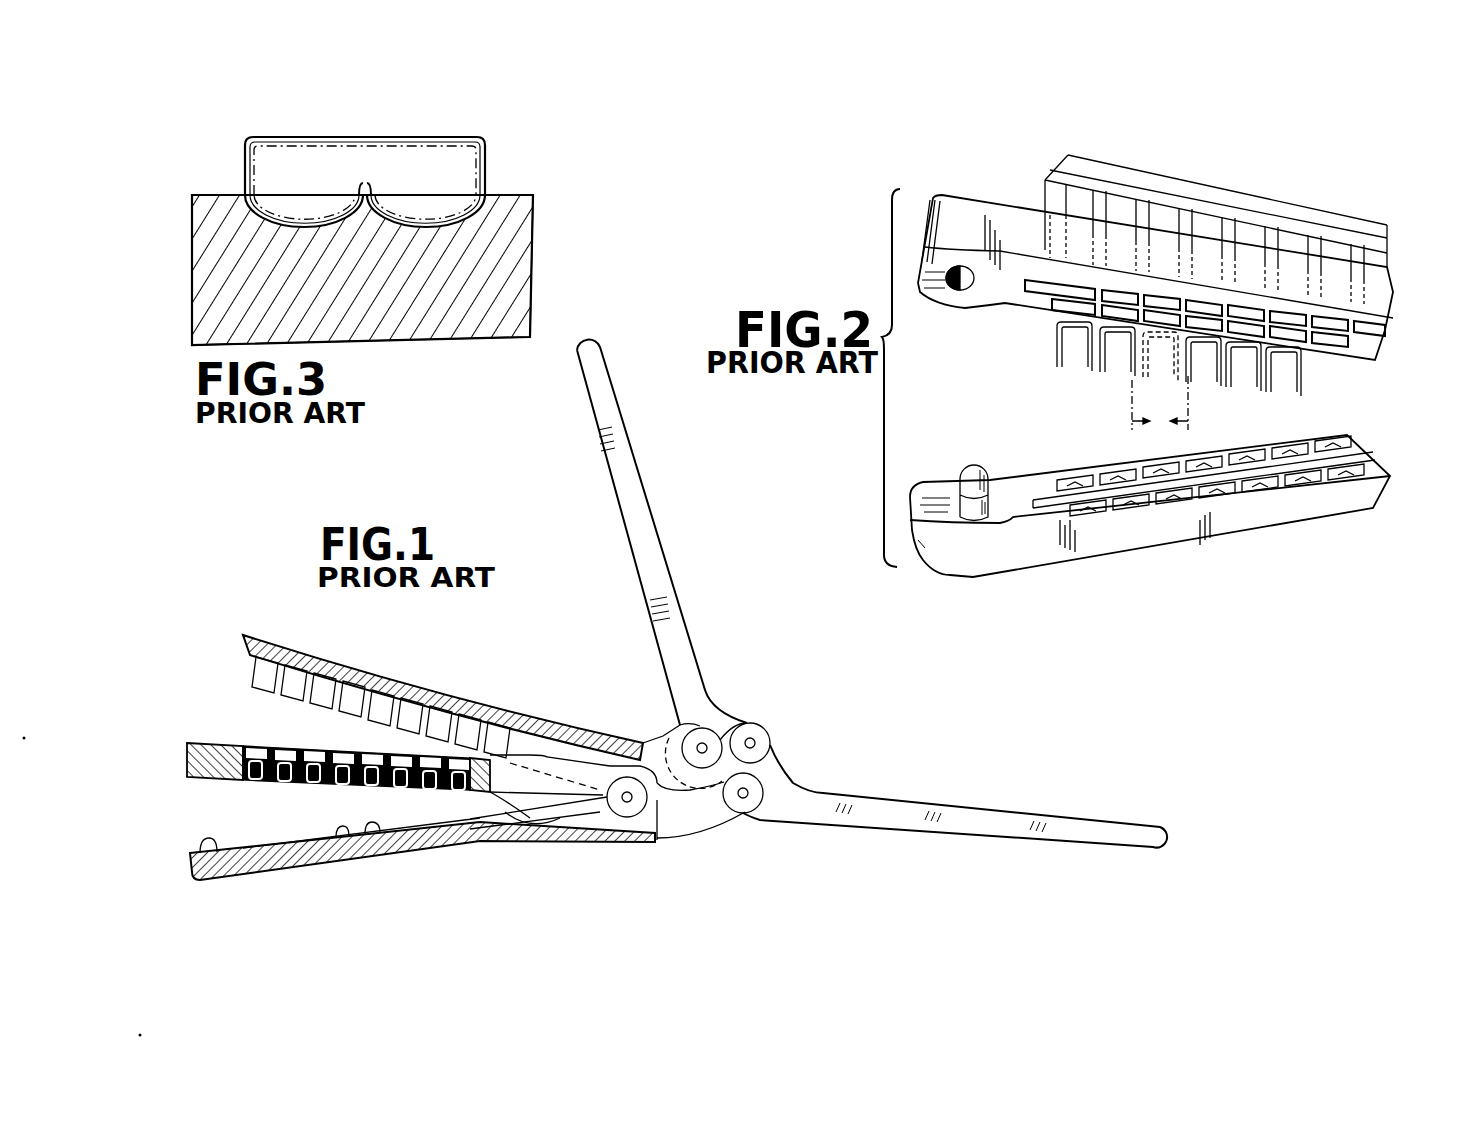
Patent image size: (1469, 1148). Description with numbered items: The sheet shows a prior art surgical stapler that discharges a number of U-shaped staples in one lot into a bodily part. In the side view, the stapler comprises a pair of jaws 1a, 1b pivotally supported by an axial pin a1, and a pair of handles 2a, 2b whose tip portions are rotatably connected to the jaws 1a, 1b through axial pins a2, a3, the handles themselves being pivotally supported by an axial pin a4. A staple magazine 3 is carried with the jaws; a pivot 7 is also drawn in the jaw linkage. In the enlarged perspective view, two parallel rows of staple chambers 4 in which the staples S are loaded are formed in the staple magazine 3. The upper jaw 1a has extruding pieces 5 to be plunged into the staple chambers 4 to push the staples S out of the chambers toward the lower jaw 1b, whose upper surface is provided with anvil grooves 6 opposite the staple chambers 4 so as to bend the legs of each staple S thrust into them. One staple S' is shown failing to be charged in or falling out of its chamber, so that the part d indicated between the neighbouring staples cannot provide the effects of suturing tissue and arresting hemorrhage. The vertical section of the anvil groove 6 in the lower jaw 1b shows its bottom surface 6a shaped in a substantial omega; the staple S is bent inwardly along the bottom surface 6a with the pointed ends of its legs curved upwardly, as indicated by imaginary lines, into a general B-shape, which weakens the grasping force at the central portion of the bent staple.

In FIG. 2, the upper jaw 1a is at (1060, 170).
In FIG. 1, the upper jaw 1a is at (462, 700).
In FIG. 3, the lower jaw 1b is at (490, 278).
In FIG. 2, the lower jaw 1b is at (1027, 548).
In FIG. 1, the lower jaw 1b is at (430, 845).
In FIG. 1, the handle 2a is at (645, 538).
In FIG. 1, the handle 2b is at (977, 820).
In FIG. 2, the staple magazine 3 is at (968, 220).
In FIG. 1, the staple magazine 3 is at (195, 745).
In FIG. 2, the staple chambers 4 is at (1170, 296).
In FIG. 1, the staple chambers 4 is at (336, 752).
In FIG. 2, the extruding pieces 5 is at (1168, 215).
In FIG. 1, the extruding pieces 5 is at (380, 690).
In FIG. 3, the anvil grooves 6 is at (423, 208).
In FIG. 2, the anvil grooves 6 is at (1100, 512).
In FIG. 1, the anvil grooves 6 is at (283, 845).
In FIG. 3, the bottom surface 6a is at (357, 213).
In FIG. 1, the pivot pin 7 is at (523, 830).
In FIG. 3, the staple S is at (436, 107).
In FIG. 2, the staple S is at (1146, 371).
In FIG. 1, the staple S is at (336, 755).
In FIG. 2, the staple S' is at (1126, 387).
In FIG. 2, the part d is at (1160, 407).
In FIG. 1, the axial pin a1 is at (627, 803).
In FIG. 1, the axial pin a2 is at (703, 748).
In FIG. 1, the axial pin a3 is at (743, 800).
In FIG. 1, the axial pin a4 is at (752, 743).